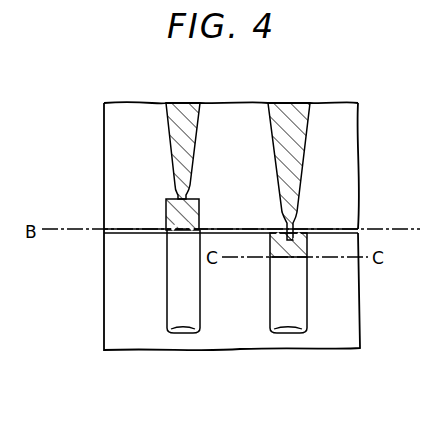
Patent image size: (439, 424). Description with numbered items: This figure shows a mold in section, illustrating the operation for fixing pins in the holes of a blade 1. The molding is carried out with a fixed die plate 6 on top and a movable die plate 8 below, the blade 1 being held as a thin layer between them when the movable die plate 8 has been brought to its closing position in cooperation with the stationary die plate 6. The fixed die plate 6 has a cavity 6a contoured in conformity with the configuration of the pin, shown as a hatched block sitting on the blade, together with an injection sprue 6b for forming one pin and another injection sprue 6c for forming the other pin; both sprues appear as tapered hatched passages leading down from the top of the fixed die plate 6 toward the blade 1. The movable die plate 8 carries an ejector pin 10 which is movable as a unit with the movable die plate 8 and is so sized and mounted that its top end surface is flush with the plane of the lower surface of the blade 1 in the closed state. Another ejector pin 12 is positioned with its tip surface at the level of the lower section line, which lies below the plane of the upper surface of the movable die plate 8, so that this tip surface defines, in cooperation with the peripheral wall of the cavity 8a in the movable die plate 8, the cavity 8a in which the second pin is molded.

The blade 1 is at (318, 228).
The fixed die plate 6 is at (109, 130).
The cavity 6a is at (167, 207).
The injection sprue 6b is at (185, 102).
The injection sprue 6c is at (292, 102).
The movable die plate 8 is at (109, 302).
The cavity 8a is at (288, 251).
The ejector pin 10 is at (187, 326).
The ejector pin 12 is at (293, 326).